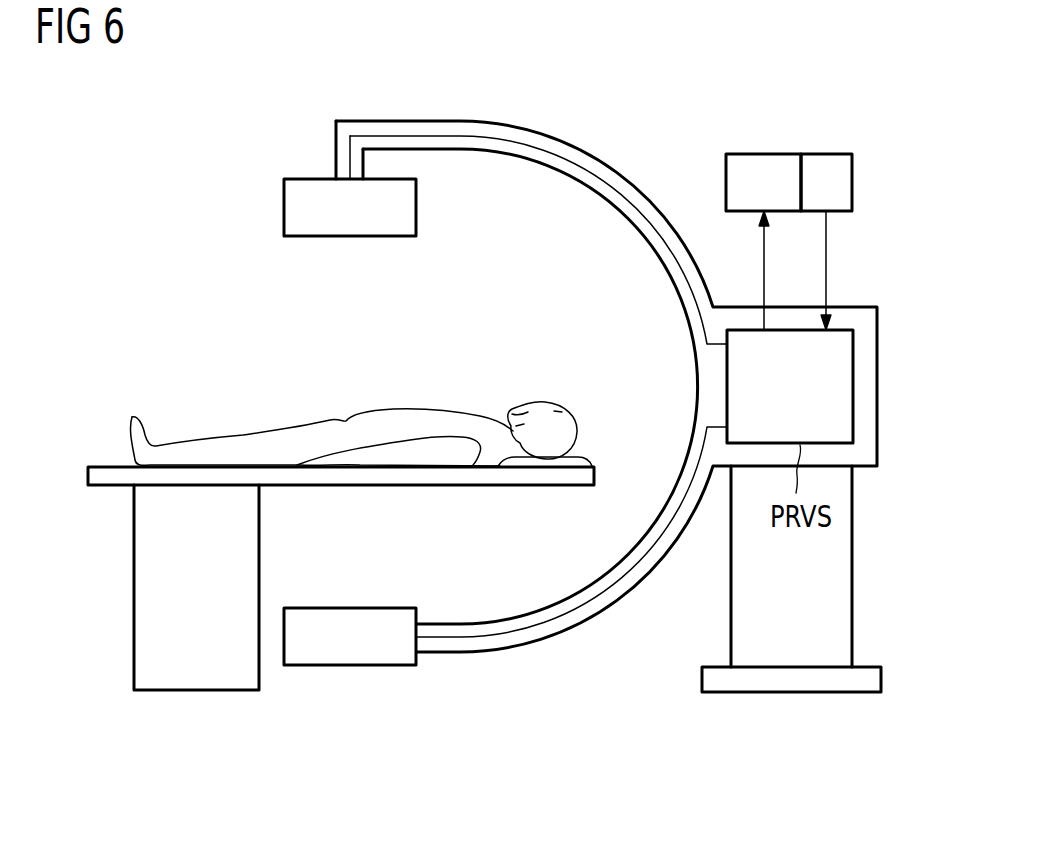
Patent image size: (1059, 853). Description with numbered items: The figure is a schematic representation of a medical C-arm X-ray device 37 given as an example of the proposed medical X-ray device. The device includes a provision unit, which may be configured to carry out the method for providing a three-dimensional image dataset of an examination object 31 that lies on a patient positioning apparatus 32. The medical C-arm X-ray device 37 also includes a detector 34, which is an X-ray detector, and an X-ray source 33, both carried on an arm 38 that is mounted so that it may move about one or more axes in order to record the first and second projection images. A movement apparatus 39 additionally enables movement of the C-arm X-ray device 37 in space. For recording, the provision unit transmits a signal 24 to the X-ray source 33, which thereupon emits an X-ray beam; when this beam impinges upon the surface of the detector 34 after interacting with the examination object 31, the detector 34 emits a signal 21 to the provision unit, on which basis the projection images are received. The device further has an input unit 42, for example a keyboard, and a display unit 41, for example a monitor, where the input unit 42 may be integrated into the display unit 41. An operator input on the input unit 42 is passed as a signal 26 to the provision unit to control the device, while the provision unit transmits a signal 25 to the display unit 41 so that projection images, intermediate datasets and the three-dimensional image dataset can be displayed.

The signal 21 is at (433, 135).
The signal 24 is at (498, 638).
The signal 25 is at (762, 242).
The signal 26 is at (828, 242).
The examination object 31 is at (398, 409).
The patient positioning apparatus 32 is at (128, 662).
The X-ray source 33 is at (350, 666).
The detector 34 is at (302, 178).
The medical C-arm X-ray device 37 is at (606, 378).
The arm 38 is at (376, 120).
The movement apparatus 39 is at (787, 692).
The display unit 41 is at (758, 152).
The input unit 42 is at (822, 152).